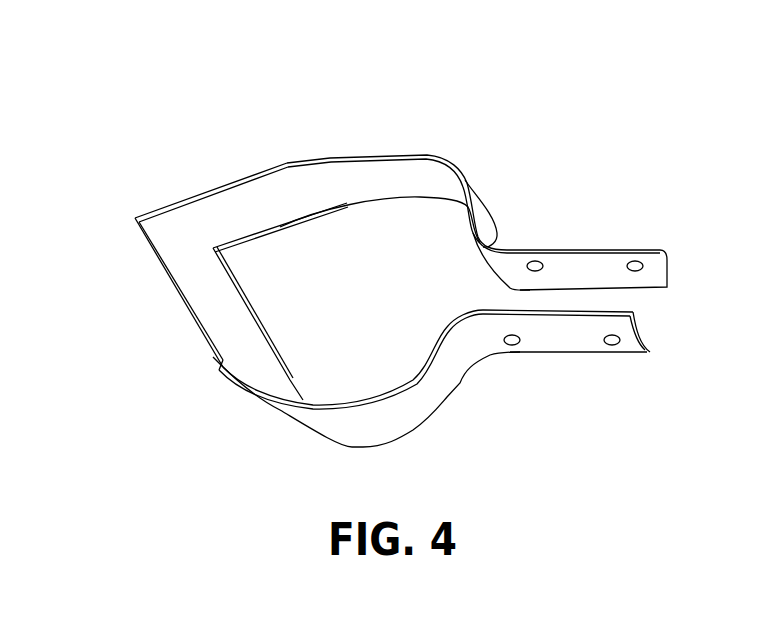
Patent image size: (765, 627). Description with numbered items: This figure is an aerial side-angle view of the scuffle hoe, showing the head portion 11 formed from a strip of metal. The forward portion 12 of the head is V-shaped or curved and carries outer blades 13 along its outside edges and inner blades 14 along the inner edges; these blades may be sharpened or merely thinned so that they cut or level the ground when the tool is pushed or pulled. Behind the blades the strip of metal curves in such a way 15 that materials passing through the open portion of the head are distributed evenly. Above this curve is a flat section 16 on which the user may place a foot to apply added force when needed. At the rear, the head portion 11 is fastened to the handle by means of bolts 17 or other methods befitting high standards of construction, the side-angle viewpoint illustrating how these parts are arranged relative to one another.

The head portion 11 is at (368, 147).
The forward portion 12 is at (137, 217).
The outer blades 13 is at (180, 317).
The inner blades 14 is at (257, 318).
The curve 15 is at (407, 148).
The flat section 16 is at (448, 407).
The bolts 17 is at (573, 352).